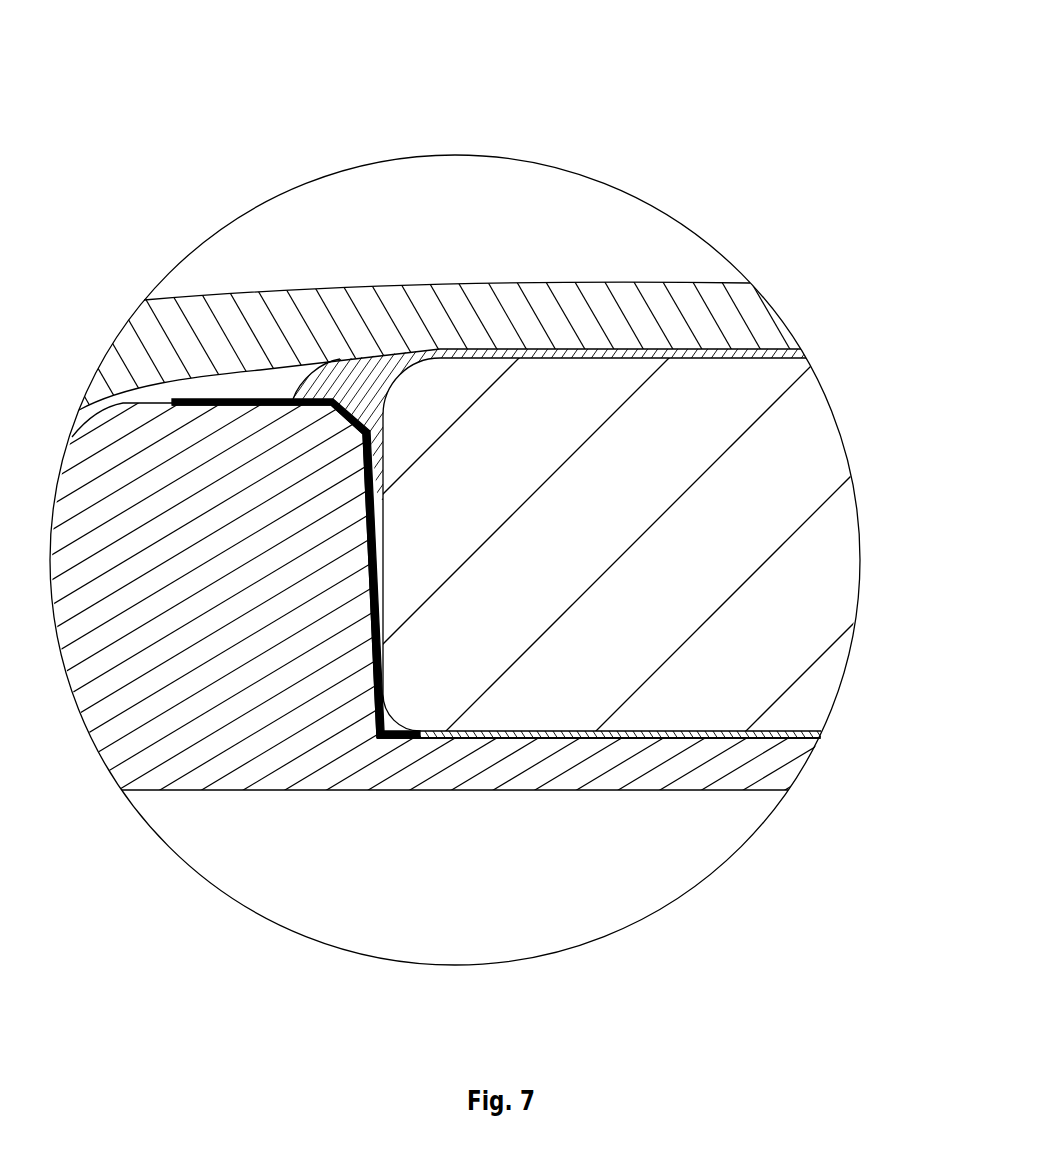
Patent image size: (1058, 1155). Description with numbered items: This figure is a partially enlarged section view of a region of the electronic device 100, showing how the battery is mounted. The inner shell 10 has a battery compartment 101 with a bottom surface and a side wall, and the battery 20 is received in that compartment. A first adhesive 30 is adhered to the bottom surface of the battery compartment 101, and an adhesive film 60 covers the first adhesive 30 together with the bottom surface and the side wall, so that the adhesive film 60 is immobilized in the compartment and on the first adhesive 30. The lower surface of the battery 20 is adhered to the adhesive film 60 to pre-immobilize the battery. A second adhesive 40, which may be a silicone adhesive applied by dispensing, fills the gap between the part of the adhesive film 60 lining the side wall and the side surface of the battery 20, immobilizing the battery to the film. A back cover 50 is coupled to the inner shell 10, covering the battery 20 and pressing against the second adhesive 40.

The electronic device 100 is at (450, 60).
The inner shell 10 is at (620, 760).
The battery compartment 101 is at (392, 727).
The battery 20 is at (732, 432).
The first adhesive 30 is at (820, 738).
The second adhesive 40 is at (713, 358).
The back cover 50 is at (713, 300).
The adhesive film 60 is at (820, 735).